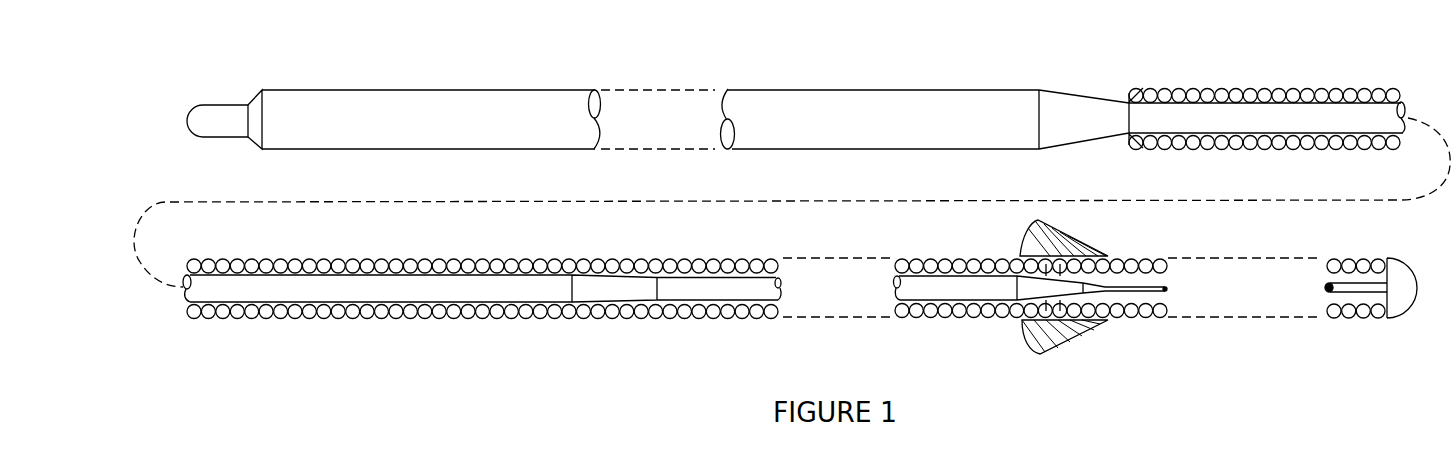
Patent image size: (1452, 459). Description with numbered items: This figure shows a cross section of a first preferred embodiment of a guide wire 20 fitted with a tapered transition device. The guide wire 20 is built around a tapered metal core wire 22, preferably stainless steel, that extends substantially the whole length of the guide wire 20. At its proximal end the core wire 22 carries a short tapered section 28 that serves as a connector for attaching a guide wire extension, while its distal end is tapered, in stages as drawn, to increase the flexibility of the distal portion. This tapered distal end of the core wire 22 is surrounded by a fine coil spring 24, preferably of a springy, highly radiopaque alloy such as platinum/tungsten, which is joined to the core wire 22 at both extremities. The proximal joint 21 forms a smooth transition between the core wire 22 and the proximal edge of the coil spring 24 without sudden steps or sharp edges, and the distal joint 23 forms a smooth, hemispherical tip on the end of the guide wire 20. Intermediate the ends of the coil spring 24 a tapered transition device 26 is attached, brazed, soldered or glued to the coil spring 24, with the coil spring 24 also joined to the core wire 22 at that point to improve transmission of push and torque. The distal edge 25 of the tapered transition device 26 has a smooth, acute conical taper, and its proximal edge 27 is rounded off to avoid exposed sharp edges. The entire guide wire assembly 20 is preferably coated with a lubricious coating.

The guide wire 20 is at (425, 338).
The proximal joint 21 is at (1120, 143).
The core wire 22 is at (437, 97).
The distal joint 23 is at (1390, 320).
The coil spring 24 is at (710, 312).
The distal edge 25 is at (1107, 322).
The tapered transition device 26 is at (1038, 354).
The proximal edge 27 is at (1018, 343).
The short tapered section 28 is at (226, 104).